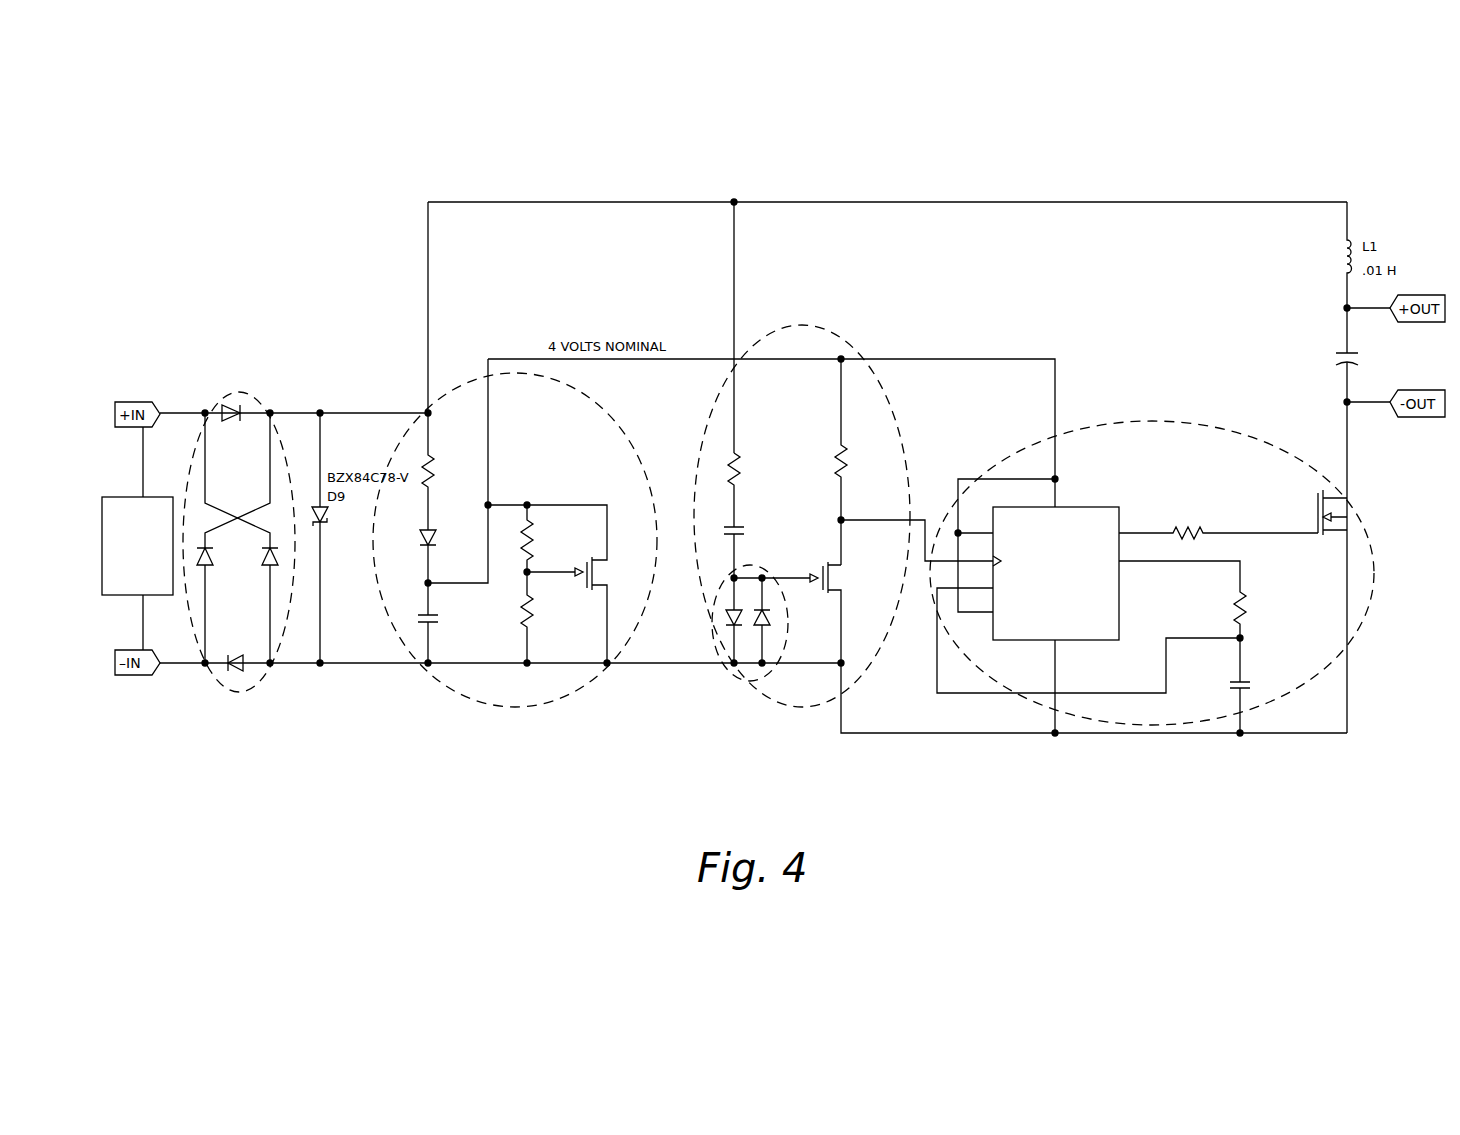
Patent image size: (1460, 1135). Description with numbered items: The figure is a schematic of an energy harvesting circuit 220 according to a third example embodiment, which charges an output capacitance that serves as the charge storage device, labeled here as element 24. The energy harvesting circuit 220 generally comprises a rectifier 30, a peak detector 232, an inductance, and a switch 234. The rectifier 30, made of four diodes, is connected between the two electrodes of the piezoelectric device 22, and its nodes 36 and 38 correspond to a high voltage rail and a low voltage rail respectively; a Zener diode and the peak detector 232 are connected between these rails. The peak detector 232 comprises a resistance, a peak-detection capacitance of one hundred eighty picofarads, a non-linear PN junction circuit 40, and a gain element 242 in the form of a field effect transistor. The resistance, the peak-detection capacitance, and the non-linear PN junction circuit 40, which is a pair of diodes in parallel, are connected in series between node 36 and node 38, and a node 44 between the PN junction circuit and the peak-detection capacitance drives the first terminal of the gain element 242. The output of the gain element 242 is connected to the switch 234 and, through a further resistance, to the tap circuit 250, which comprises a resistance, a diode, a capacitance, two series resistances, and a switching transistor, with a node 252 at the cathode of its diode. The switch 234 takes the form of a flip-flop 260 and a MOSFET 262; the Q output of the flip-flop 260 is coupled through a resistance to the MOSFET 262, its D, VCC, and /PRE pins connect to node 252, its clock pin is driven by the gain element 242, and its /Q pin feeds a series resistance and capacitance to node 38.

The energy harvesting circuit 220 is at (886, 189).
The piezoelectric device 22 is at (128, 497).
The node 36 is at (272, 411).
The node 38 is at (272, 665).
The rectifier 30 is at (208, 693).
The node 252 is at (426, 583).
The tap circuit 250 is at (493, 710).
The node 44 is at (732, 576).
The non-linear PN junction circuit 40 is at (768, 683).
The gain element 242 is at (826, 561).
The peak detector 232 is at (806, 713).
The flip-flop 260 is at (1094, 507).
The MOSFET 262 is at (1316, 518).
The switch 234 is at (1142, 418).
The output capacitor C4 24 is at (1364, 358).